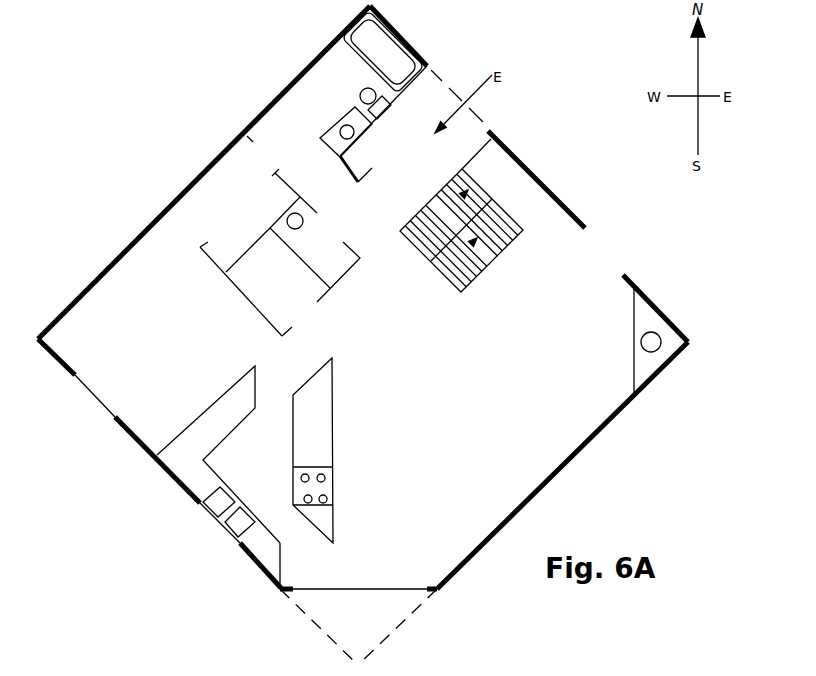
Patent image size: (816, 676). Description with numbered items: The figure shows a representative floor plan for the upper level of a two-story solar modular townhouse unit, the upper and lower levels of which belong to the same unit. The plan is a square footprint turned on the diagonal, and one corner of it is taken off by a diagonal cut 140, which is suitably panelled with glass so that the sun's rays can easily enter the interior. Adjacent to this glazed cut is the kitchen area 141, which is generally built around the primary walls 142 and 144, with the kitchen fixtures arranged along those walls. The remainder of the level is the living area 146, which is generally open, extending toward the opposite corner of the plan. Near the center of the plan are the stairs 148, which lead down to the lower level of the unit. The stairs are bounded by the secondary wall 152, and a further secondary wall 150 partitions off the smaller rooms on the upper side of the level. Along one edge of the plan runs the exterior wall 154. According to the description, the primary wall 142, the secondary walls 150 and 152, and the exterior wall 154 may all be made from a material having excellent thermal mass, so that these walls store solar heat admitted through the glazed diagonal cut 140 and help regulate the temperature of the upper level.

The diagonal cut 140 is at (326, 591).
The kitchen area 141 is at (265, 475).
The primary wall 142 is at (336, 503).
The primary wall 144 is at (281, 563).
The living area 146 is at (536, 376).
The stairs 148 is at (432, 239).
The secondary wall 150 is at (332, 283).
The secondary wall 152 is at (478, 158).
The exterior wall 154 is at (546, 191).